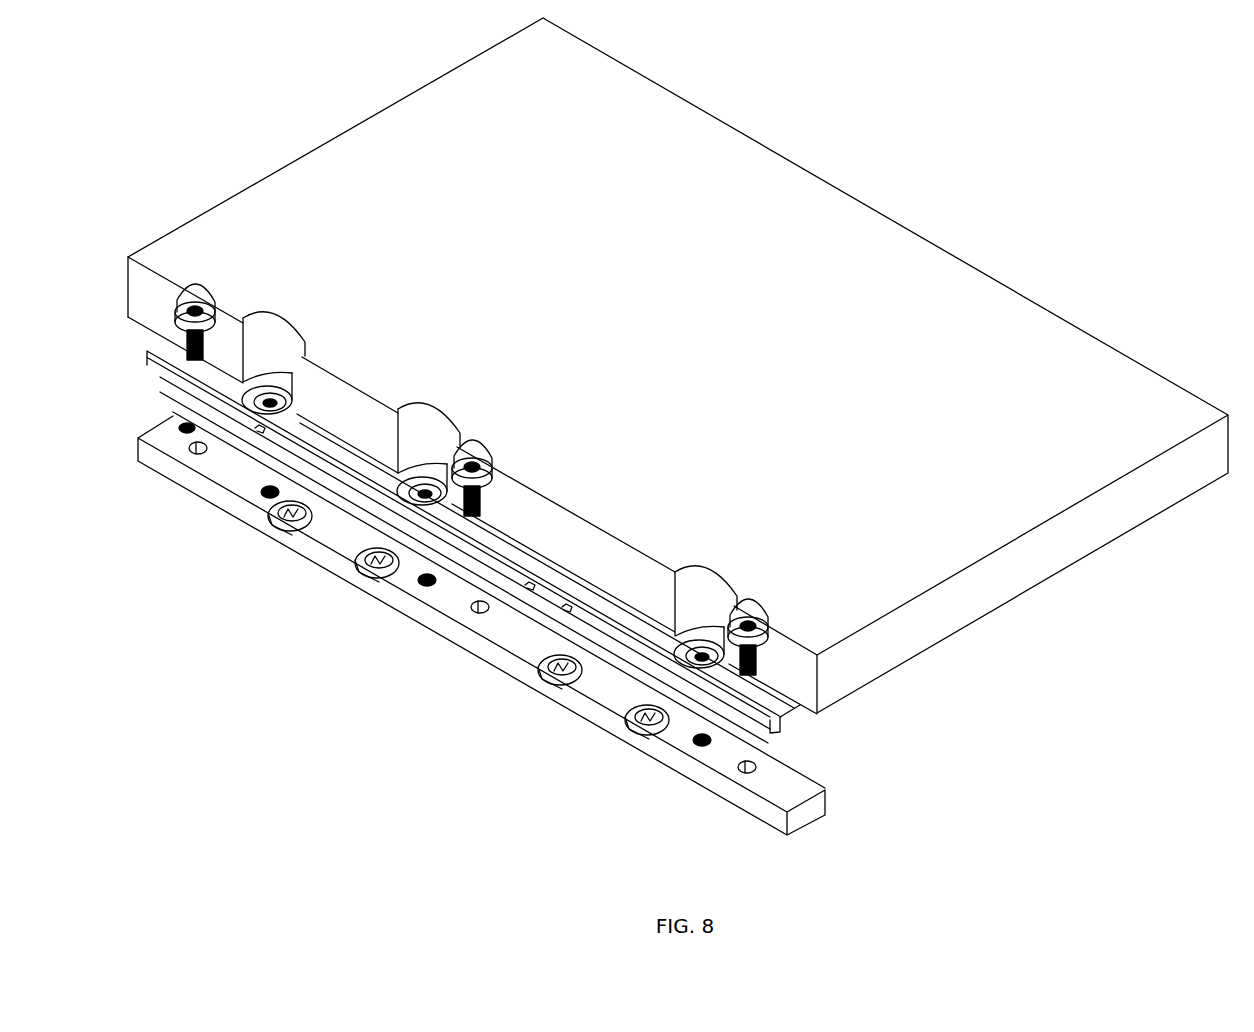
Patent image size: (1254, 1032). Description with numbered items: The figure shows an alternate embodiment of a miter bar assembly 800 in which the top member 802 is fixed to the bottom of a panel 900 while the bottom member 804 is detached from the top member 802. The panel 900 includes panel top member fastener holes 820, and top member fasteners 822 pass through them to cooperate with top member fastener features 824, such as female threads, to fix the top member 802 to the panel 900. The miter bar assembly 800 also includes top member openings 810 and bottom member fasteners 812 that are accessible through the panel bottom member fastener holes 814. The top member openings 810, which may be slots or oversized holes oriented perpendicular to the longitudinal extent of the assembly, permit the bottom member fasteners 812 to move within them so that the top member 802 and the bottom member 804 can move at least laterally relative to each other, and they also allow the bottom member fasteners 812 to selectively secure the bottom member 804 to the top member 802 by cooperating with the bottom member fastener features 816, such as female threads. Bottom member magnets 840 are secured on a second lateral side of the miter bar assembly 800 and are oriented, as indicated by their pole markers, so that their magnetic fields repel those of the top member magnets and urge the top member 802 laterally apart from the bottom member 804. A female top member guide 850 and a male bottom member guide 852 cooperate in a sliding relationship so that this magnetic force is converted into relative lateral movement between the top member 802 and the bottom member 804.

The panel 900 is at (503, 195).
The miter bar assembly 800 is at (211, 668).
The top member 802 is at (788, 723).
The bottom member 804 is at (802, 790).
The top member openings 810 is at (282, 390).
The bottom member fasteners 812 is at (270, 400).
The panel bottom member fastener holes 814 is at (290, 320).
The bottom member fastener features 816 is at (262, 497).
The panel top member fastener holes 820 is at (214, 290).
The top member fasteners 822 is at (193, 307).
The top member fastener features 824 is at (190, 362).
The bottom member magnets 840 is at (278, 520).
The top member guide 850 is at (278, 442).
The bottom member guide 852 is at (272, 522).